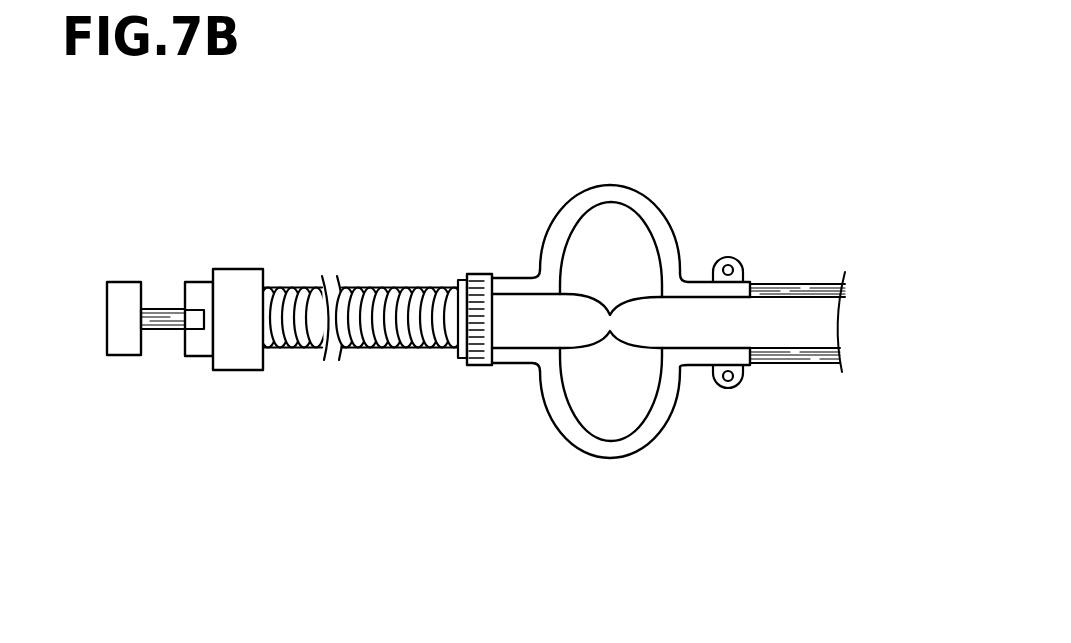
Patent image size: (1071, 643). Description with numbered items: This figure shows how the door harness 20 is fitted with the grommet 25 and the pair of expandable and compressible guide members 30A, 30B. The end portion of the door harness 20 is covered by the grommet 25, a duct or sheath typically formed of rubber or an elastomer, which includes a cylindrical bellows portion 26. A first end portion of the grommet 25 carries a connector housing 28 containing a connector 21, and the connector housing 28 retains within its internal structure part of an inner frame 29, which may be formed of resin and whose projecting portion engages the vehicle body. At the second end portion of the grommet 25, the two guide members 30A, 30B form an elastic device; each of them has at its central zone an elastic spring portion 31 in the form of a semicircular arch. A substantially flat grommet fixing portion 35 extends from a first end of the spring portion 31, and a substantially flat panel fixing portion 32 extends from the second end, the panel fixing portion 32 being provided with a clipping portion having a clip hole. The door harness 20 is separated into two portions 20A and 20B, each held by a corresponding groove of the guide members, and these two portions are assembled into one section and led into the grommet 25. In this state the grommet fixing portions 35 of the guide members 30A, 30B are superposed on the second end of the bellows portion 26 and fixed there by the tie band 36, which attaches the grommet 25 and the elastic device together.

The door harness 20 is at (160, 312).
The door harness portion 20A is at (808, 283).
The door harness portion 20B is at (800, 365).
The connector 21 is at (121, 290).
The grommet 25 is at (378, 265).
The bellows portion 26 is at (283, 285).
The connector housing 28 is at (240, 362).
The inner frame 29 is at (197, 357).
The expandable and compressible guide member 30A is at (674, 196).
The expandable and compressible guide member 30B is at (690, 415).
The spring portion 31 is at (617, 186).
The panel fixing portion 32 is at (705, 282).
The grommet fixing portion 35 is at (510, 279).
The tie band 36 is at (468, 276).